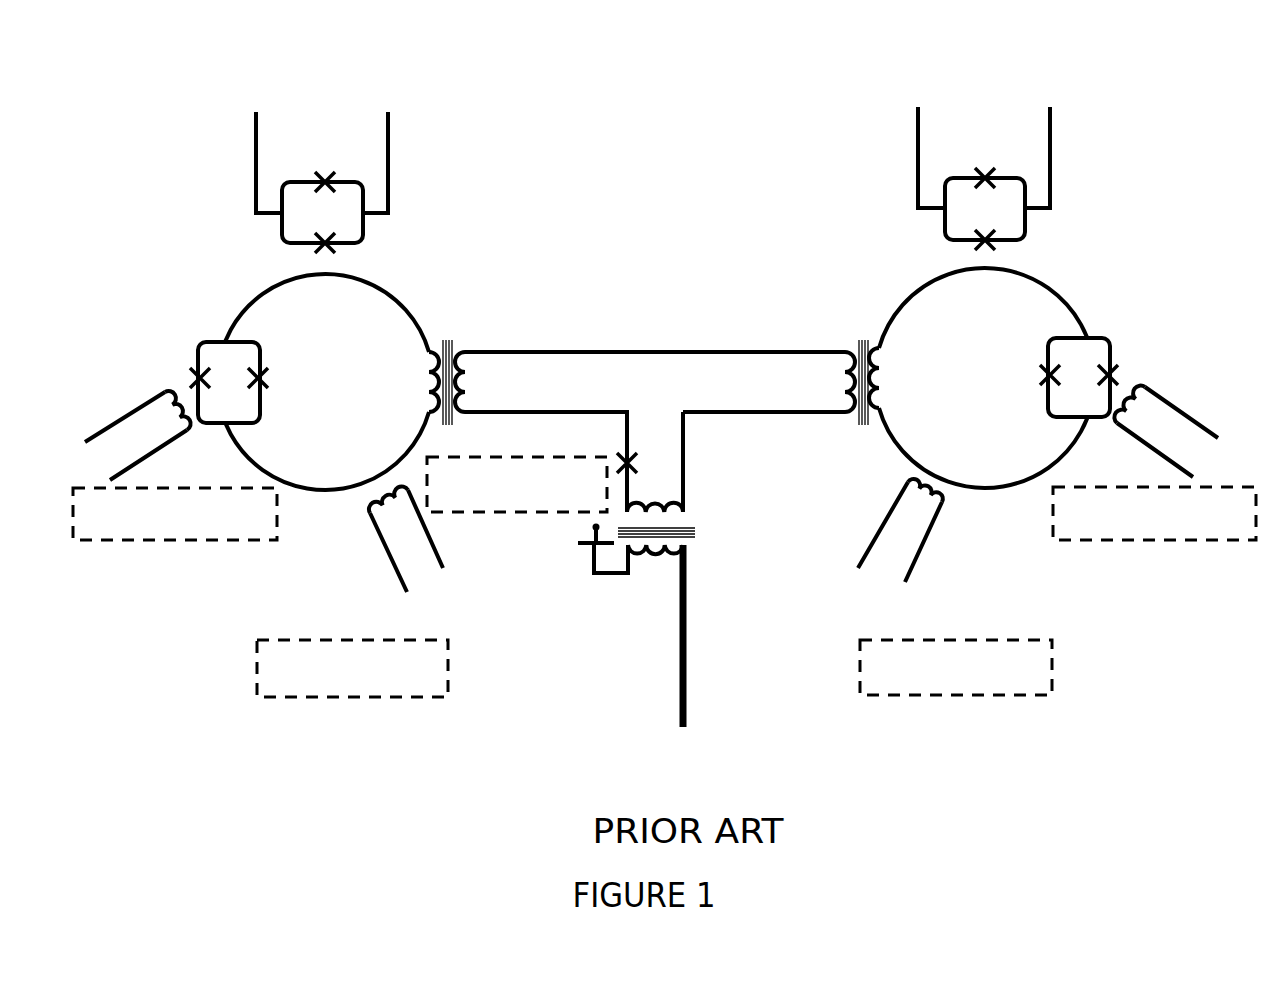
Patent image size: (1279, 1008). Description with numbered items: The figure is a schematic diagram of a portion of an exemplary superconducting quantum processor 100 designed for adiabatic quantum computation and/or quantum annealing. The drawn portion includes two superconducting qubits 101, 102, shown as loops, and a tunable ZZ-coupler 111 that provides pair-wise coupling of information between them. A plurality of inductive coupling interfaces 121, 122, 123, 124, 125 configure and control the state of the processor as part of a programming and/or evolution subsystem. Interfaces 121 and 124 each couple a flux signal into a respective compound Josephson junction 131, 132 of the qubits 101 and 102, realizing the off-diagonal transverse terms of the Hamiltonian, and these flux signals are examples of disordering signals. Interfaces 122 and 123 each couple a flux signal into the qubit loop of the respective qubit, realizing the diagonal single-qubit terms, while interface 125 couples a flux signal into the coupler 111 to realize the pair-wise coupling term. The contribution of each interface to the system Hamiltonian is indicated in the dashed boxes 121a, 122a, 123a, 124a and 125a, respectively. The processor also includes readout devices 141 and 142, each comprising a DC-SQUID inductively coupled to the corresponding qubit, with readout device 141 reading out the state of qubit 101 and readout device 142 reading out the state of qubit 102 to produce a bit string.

The superconducting quantum processor 100 is at (185, 136).
The superconducting qubit 101 is at (268, 312).
The superconducting qubit 102 is at (1053, 318).
The tunable ZZ-coupler 111 is at (660, 362).
The interface 121 is at (165, 392).
The box 121a is at (197, 541).
The interface 122 is at (385, 509).
The box 122a is at (372, 699).
The interface 123 is at (938, 503).
The box 123a is at (922, 697).
The interface 124 is at (1145, 385).
The box 124a is at (1118, 542).
The interface 125 is at (657, 553).
The box 125a is at (553, 516).
The compound Josephson junction 131 is at (255, 378).
The compound Josephson junction 132 is at (1068, 377).
The readout device 141 is at (325, 205).
The readout device 142 is at (982, 205).